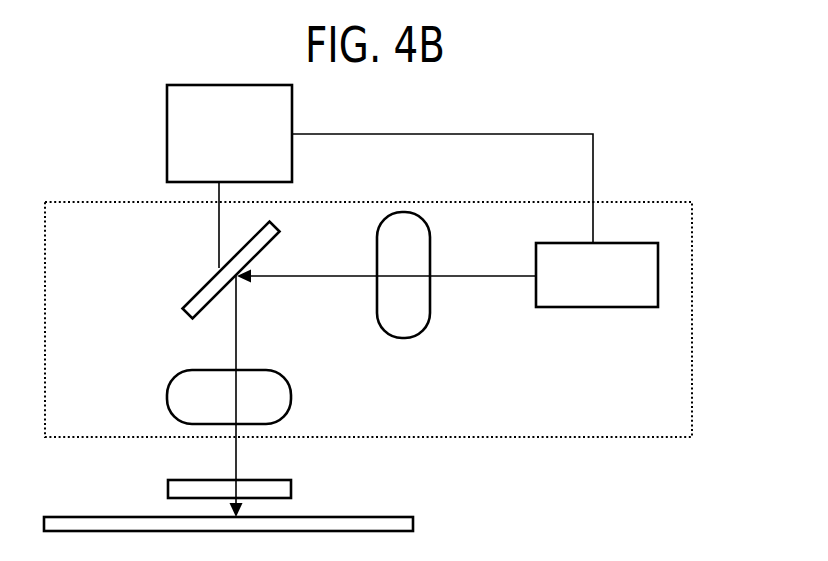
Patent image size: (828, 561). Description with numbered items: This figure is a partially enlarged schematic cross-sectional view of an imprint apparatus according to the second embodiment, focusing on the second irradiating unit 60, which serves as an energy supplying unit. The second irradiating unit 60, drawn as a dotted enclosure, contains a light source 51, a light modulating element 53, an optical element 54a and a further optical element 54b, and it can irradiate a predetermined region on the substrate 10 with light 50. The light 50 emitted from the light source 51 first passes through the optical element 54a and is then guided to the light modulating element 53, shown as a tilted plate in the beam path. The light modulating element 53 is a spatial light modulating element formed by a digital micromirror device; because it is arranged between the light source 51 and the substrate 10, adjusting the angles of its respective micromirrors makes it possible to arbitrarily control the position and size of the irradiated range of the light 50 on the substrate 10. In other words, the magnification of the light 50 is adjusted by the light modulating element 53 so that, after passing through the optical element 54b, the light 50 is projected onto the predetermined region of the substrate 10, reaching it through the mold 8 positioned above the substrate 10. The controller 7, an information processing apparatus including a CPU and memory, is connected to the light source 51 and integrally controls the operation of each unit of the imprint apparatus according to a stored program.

The controller 7 is at (167, 136).
The mold 8 is at (168, 490).
The substrate 10 is at (413, 523).
The light 50 is at (326, 278).
The light source 51 is at (603, 307).
The light modulating element 53 is at (210, 282).
The optical element 54a is at (403, 338).
The optical element 54b is at (167, 391).
The second irradiating unit 60 is at (692, 248).